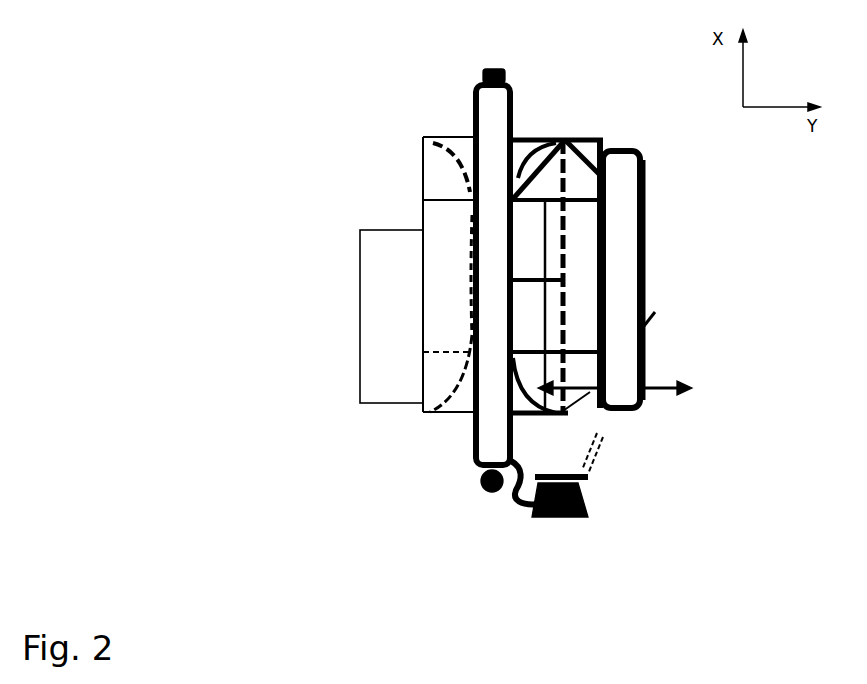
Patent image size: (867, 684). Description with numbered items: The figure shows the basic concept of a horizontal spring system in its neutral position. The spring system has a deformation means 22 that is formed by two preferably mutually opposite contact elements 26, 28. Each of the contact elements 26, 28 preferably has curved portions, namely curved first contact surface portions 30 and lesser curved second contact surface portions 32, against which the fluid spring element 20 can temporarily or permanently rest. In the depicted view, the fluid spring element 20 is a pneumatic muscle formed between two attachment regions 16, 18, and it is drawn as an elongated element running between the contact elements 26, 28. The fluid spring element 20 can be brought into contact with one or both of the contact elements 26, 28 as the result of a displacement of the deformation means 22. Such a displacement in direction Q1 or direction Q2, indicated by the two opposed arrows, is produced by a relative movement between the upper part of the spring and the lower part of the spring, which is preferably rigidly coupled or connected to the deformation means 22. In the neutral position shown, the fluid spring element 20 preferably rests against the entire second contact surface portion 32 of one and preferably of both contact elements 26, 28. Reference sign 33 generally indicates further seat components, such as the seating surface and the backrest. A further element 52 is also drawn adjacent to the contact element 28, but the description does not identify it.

The attachment region 16 is at (496, 68).
The attachment region 18 is at (488, 497).
The fluid spring element 20 is at (480, 443).
The deformation means 22 is at (562, 84).
The contact element 26 is at (440, 229).
The contact element 28 is at (650, 237).
The first contact surface portion 30 is at (543, 139).
The second contact surface portion 32 is at (570, 150).
The further seat components 33 is at (590, 532).
The cylinder 52 is at (633, 181).
The displacement direction Q1 is at (575, 398).
The displacement direction Q2 is at (660, 396).